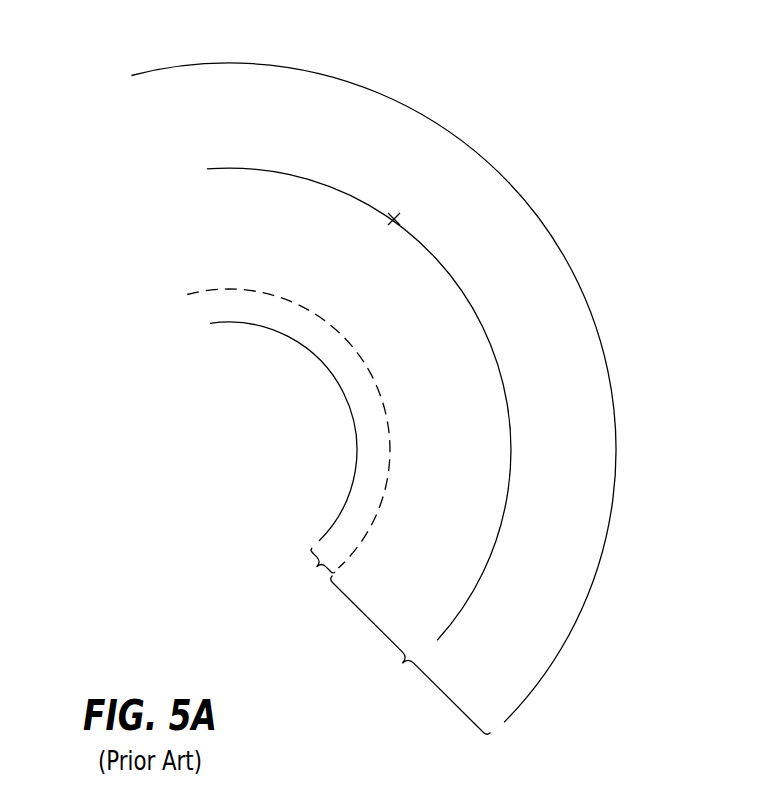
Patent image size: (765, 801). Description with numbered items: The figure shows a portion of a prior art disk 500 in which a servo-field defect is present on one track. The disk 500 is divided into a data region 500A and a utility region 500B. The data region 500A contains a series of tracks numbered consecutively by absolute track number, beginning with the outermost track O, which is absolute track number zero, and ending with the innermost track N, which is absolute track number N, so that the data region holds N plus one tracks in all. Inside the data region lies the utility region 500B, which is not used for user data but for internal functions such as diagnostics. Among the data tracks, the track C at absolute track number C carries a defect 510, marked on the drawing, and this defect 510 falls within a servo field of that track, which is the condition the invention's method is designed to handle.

The disk 500 is at (365, 361).
The defect 510 is at (394, 219).
The data region 500A is at (411, 655).
The utility region 500B is at (296, 570).
The track 0 O is at (364, 392).
The track C is at (348, 399).
The track N is at (277, 427).